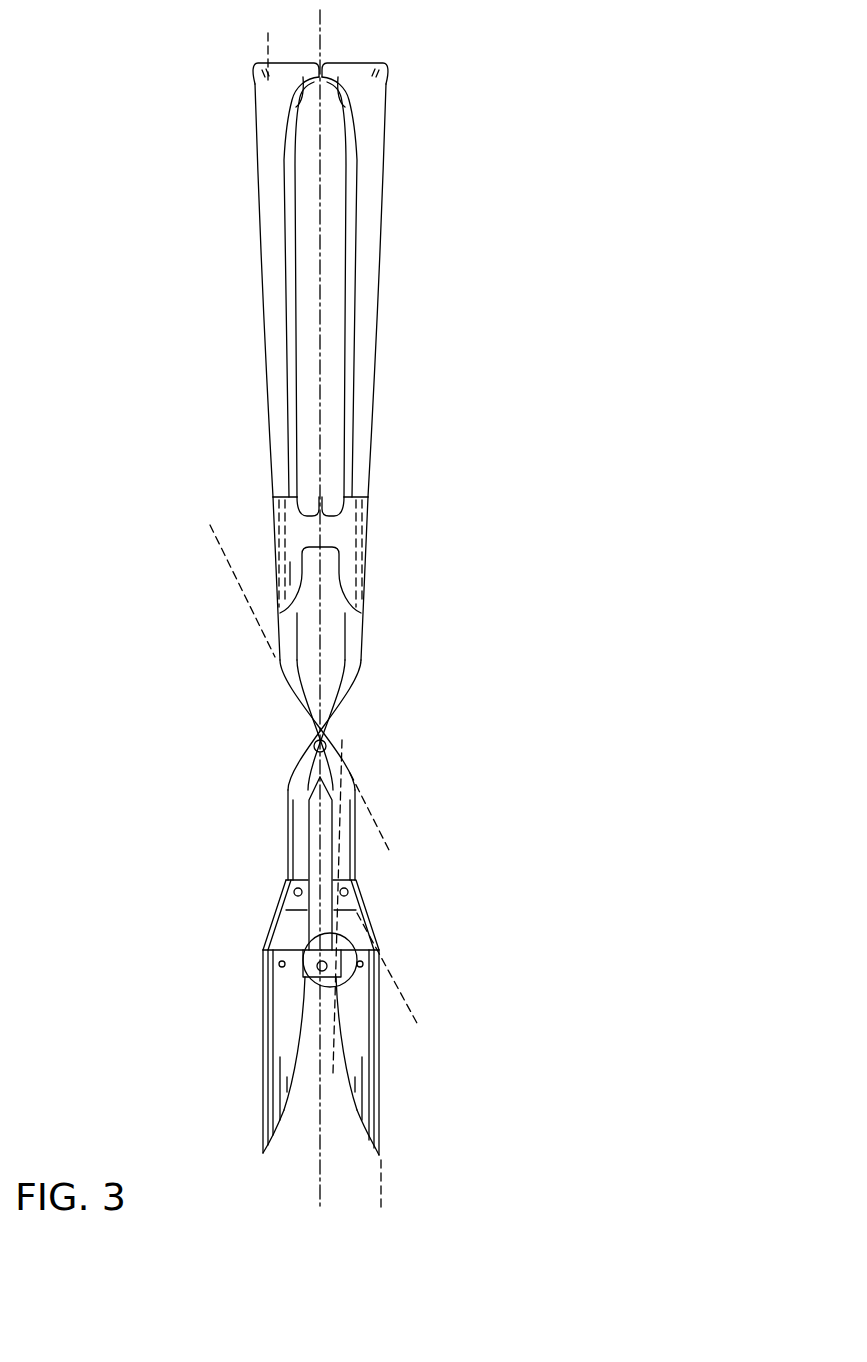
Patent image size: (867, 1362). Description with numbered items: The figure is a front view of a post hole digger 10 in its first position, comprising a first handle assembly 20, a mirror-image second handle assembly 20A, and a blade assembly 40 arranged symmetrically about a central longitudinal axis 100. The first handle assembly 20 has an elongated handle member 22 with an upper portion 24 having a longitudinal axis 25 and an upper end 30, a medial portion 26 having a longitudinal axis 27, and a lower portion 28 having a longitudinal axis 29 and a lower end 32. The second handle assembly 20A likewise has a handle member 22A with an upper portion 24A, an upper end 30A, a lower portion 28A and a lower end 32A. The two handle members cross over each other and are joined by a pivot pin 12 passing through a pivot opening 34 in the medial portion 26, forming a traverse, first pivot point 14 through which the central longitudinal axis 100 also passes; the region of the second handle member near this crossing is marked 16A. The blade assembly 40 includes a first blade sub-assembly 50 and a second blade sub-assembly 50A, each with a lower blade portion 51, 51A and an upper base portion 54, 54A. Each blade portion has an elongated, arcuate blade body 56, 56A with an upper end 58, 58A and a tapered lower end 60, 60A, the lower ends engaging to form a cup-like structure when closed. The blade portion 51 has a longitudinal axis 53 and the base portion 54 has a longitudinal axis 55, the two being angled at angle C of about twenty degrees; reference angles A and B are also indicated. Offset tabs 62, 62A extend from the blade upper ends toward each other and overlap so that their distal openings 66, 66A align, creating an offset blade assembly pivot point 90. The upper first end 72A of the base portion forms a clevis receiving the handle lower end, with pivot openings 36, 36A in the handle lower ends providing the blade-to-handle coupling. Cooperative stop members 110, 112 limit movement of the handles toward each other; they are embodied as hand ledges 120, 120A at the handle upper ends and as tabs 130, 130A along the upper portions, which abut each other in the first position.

The post hole digger 10 is at (178, 68).
The pivot pin 12 is at (306, 757).
The traverse, first pivot point 14 is at (447, 752).
The second arm 16A is at (343, 713).
The first handle assembly 20 is at (222, 265).
The second handle assembly 20A is at (415, 265).
The handle member 22 is at (271, 403).
The handle member 22A is at (362, 400).
The upper portion 24 is at (270, 337).
The upper portion 24A is at (375, 333).
The longitudinal axis 25 is at (265, 42).
The medial portion 26 is at (292, 718).
The longitudinal axis 27 is at (230, 569).
The lower portion 28 is at (356, 842).
The lower portion 28A is at (288, 830).
The longitudinal axis 29 is at (333, 1060).
The upper end 30 is at (255, 85).
The upper end 30A is at (380, 90).
The lower end 32 is at (352, 857).
The lower end 32A is at (291, 858).
The pivot opening 34 is at (313, 748).
The first blade sub-assembly pivot opening 36 is at (349, 891).
The second blade sub-assembly pivot opening 36A is at (294, 893).
The blade assembly 40 is at (122, 862).
The first blade sub-assembly 50 is at (384, 1030).
The second blade sub-assembly 50A is at (262, 1038).
The blade portion 51 is at (384, 1050).
The blade portion 51A is at (262, 1060).
The longitudinal axis 53 is at (383, 1180).
The base portion 54 is at (372, 928).
The base portion 54A is at (285, 910).
The longitudinal axis 55 is at (384, 968).
The blade body 56 is at (384, 1065).
The blade body 56A is at (262, 1090).
The upper end 58 is at (382, 988).
The upper end 58A is at (279, 964).
The lower end 60 is at (381, 1155).
The lower end 60A is at (264, 1153).
The offset tab 62 is at (358, 915).
The offset tab 62A is at (305, 958).
The distal opening 66 is at (379, 950).
The distal opening 66A is at (307, 987).
The upper first end 72A is at (288, 882).
The blade assembly pivot point 90 is at (302, 934).
The central longitudinal axis 100 is at (322, 42).
The cooperative stop member 110 is at (300, 100).
The cooperative stop member 112 is at (352, 112).
The first hand ledge 120 is at (297, 62).
The second hand ledge 120A is at (345, 63).
The tab 130 is at (313, 532).
The tab 130A is at (328, 538).
The angle A is at (287, 577).
The angle B is at (362, 830).
The angle C is at (413, 1008).